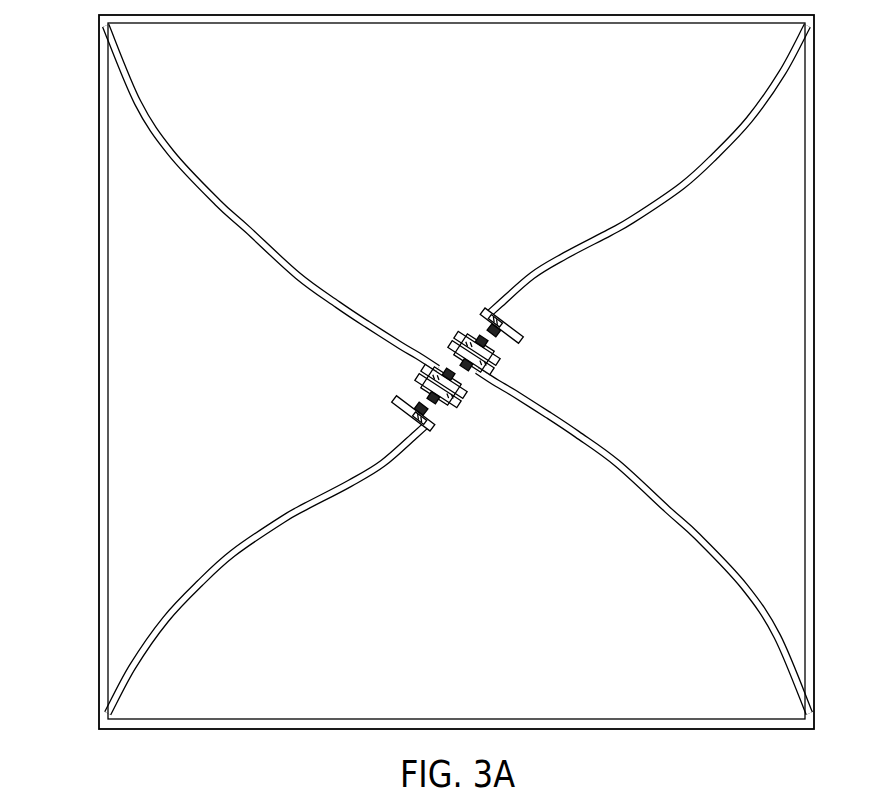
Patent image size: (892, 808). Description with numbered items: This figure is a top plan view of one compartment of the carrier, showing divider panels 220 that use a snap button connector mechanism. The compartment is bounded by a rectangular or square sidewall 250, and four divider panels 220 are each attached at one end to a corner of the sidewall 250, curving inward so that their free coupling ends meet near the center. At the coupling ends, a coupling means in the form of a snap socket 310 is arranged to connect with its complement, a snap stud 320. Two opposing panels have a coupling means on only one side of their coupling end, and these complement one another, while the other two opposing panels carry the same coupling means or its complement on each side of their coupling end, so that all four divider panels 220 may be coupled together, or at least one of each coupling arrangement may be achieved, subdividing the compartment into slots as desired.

The divider panels 220 is at (280, 525).
The sidewall 250 is at (100, 339).
The snap socket 310 is at (407, 403).
The snap stud 320 is at (437, 403).